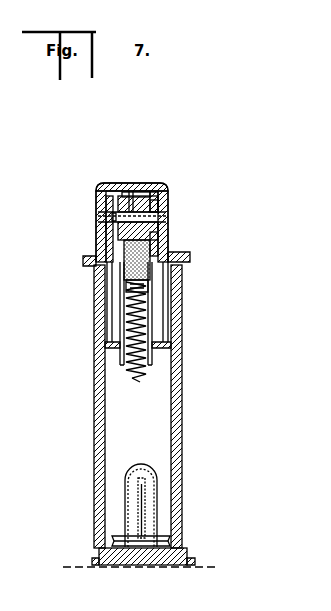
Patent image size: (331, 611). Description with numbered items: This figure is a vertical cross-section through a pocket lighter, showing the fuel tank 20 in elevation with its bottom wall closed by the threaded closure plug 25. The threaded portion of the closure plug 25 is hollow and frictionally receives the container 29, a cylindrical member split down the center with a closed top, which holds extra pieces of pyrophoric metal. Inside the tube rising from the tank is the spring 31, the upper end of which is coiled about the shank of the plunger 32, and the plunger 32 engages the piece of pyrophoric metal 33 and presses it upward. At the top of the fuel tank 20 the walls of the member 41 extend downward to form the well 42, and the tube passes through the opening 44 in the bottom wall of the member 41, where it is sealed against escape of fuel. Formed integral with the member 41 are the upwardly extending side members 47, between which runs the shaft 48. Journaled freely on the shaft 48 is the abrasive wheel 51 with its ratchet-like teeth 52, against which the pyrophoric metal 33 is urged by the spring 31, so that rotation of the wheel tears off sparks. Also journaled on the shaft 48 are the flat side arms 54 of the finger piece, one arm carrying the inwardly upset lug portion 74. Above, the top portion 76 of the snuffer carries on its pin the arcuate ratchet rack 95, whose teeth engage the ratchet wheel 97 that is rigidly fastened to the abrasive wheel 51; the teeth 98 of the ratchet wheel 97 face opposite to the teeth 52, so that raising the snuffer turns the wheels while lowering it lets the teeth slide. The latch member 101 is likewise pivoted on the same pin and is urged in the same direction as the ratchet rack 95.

The fuel tank 20 is at (94, 430).
The closure plug 25 is at (160, 536).
The container 29 is at (128, 468).
The spring 31 is at (132, 380).
The plunger 32 is at (168, 278).
The pyrophoric metal 33 is at (178, 257).
The member 41 is at (165, 296).
The well 42 is at (155, 320).
The opening 44 is at (128, 328).
The side members 47 is at (96, 246).
The shaft 48 is at (166, 215).
The abrasive wheel 51 is at (98, 198).
The teeth 52 is at (120, 186).
The side arms 54 is at (97, 231).
The lug portion 74 is at (99, 214).
The top portion 76 is at (131, 186).
The ratchet rack 95 is at (160, 245).
The ratchet wheel 97 is at (158, 204).
The teeth 98 is at (153, 190).
The latch member 101 is at (88, 266).